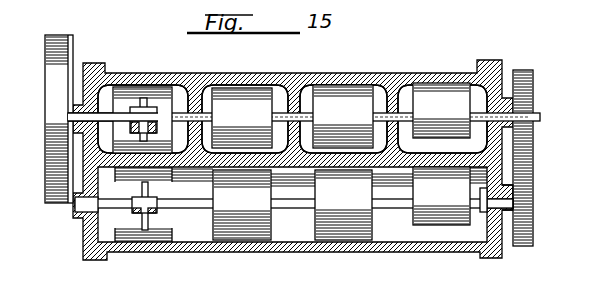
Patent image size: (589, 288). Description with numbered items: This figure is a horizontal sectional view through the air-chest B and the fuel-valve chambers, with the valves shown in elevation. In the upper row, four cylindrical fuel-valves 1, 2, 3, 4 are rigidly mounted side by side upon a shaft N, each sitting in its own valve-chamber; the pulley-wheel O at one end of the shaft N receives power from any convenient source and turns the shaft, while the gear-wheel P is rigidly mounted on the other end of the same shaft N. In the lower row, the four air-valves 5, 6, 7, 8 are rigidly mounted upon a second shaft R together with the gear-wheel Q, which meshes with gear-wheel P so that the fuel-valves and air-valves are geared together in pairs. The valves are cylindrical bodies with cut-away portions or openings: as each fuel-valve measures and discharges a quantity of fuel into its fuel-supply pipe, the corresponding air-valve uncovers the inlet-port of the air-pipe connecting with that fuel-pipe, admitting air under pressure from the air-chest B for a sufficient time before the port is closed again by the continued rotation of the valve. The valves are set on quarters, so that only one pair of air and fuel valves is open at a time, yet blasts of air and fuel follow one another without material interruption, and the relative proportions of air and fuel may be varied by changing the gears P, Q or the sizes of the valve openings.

The pulley-wheel O is at (47, 101).
The gear-wheel P is at (533, 98).
The gear-wheel Q is at (498, 186).
The shaft N is at (297, 125).
The air-chest B is at (389, 228).
The shaft R is at (290, 207).
The fuel-valve 1 is at (155, 100).
The fuel-valve 2 is at (242, 118).
The fuel-valve 3 is at (343, 116).
The fuel-valve 4 is at (441, 110).
The air-valve 5 is at (130, 222).
The air-valve 6 is at (242, 205).
The air-valve 7 is at (343, 205).
The air-valve 8 is at (441, 196).